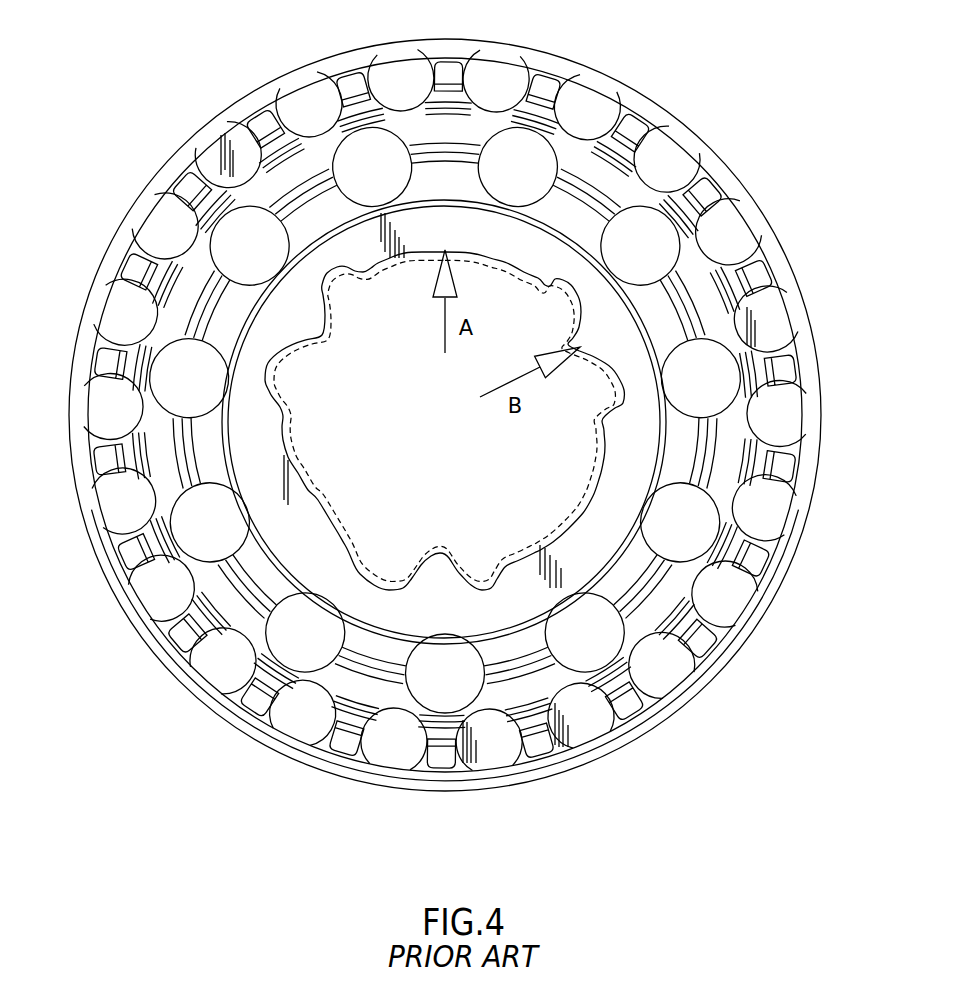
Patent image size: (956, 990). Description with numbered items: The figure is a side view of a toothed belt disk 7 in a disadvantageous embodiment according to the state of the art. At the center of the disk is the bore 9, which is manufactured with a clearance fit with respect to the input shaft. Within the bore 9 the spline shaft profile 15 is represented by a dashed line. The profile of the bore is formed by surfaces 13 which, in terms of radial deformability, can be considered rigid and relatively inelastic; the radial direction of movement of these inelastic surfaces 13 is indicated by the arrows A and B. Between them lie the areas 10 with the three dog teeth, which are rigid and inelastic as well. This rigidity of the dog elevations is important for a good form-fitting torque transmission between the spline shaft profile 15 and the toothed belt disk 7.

The toothed belt disk 7 is at (442, 125).
The bore 9 is at (375, 487).
The areas with the three dog teeth 10 is at (283, 326).
The surfaces 13 is at (320, 327).
The spline shaft profile 15 is at (288, 421).